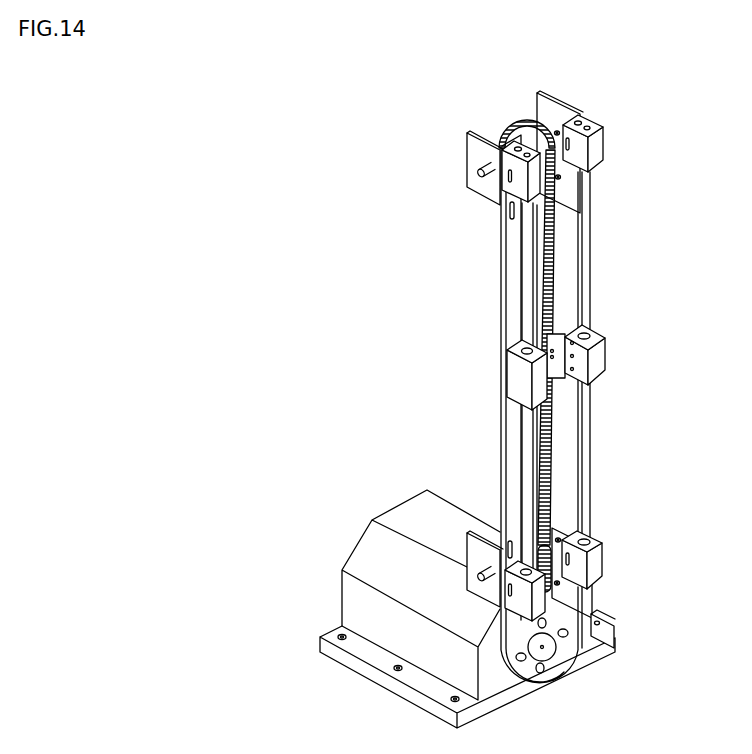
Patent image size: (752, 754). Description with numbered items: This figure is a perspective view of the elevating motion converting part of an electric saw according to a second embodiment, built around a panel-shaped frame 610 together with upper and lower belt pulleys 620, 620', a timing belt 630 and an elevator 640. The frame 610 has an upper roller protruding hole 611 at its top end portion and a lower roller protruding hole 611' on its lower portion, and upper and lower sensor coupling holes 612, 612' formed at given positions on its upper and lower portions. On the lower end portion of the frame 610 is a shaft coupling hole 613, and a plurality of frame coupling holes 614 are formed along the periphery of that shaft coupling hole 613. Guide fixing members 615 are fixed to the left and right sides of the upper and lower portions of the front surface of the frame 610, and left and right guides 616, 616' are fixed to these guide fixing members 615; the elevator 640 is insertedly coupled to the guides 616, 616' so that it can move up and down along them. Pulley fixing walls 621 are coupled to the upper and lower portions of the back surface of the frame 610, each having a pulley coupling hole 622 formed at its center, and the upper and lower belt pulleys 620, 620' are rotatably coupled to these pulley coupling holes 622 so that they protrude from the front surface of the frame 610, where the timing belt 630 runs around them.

The frame 610 is at (502, 282).
The upper roller protruding hole 611 is at (560, 136).
The lower roller protruding hole 611' is at (605, 588).
The upper sensor coupling hole 612 is at (486, 229).
The lower sensor coupling hole 612' is at (476, 510).
The shaft coupling hole 613 is at (545, 657).
The frame coupling holes 614 is at (566, 635).
The guide fixing members 615 is at (596, 142).
The left guide 616 is at (475, 386).
The right guide 616' is at (633, 357).
The upper belt pulley 620 is at (502, 114).
The lower belt pulley 620' is at (596, 531).
The pulley fixing walls 621 is at (477, 146).
The pulley coupling holes 622 is at (479, 167).
The timing belt 630 is at (551, 223).
The elevator 640 is at (604, 337).